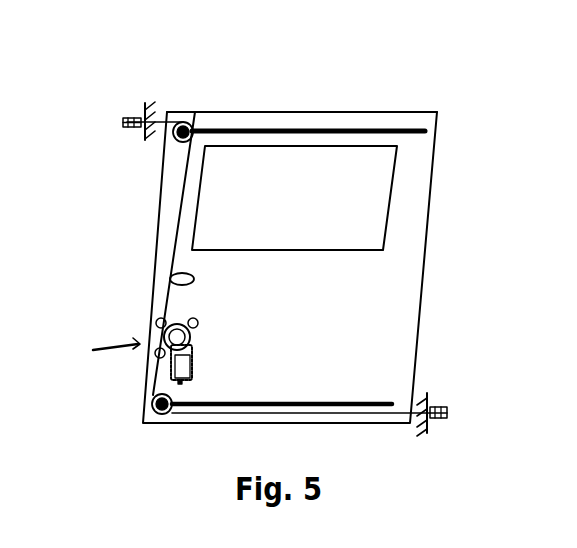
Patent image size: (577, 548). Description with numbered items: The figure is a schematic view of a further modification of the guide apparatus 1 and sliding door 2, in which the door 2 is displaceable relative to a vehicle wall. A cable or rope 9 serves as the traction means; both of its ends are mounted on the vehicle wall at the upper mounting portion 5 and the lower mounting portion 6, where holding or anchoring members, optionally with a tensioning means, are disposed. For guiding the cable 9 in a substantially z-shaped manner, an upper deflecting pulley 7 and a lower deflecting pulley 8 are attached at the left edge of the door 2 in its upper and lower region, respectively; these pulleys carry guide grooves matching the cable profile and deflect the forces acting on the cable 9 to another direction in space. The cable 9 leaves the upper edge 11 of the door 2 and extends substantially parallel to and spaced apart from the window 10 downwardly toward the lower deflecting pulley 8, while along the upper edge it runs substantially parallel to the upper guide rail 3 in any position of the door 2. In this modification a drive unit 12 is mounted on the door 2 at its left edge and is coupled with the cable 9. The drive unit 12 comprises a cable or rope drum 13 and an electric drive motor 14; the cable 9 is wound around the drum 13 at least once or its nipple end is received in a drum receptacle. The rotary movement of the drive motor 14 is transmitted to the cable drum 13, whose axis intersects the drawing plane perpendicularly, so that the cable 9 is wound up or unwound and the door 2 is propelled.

The guide apparatus 1 is at (548, 47).
The door 2 is at (410, 293).
The upper guide rail 3 is at (290, 132).
The upper mounting portion 5 is at (140, 118).
The lower mounting portion 6 is at (448, 403).
The upper deflecting pulley 7 is at (187, 127).
The lower deflecting pulley 8 is at (152, 410).
The cable or rope 9 is at (180, 219).
The window 10 is at (375, 230).
The upper edge 11 is at (390, 117).
The drive unit 12 is at (98, 353).
The cable or rope drum 13 is at (193, 330).
The drive motor 14 is at (183, 363).